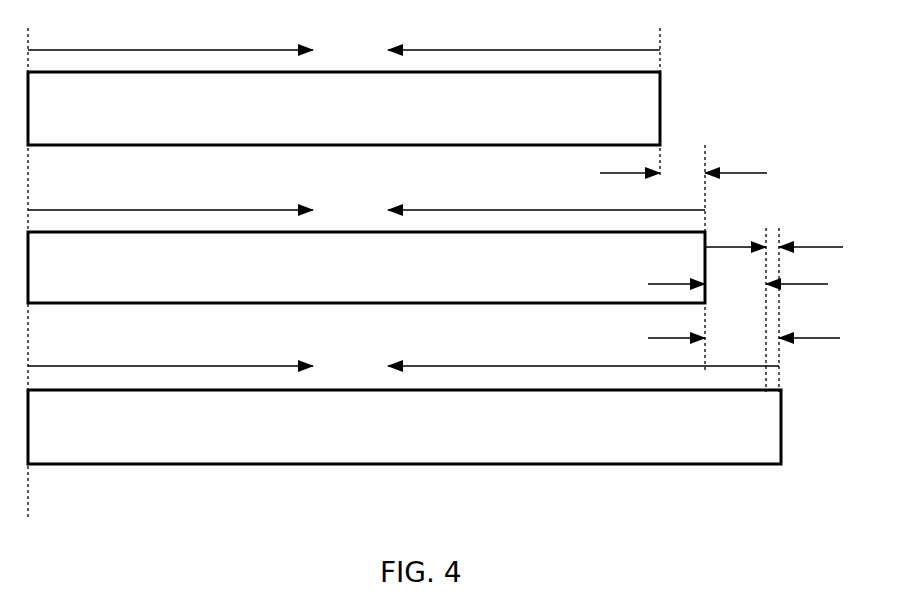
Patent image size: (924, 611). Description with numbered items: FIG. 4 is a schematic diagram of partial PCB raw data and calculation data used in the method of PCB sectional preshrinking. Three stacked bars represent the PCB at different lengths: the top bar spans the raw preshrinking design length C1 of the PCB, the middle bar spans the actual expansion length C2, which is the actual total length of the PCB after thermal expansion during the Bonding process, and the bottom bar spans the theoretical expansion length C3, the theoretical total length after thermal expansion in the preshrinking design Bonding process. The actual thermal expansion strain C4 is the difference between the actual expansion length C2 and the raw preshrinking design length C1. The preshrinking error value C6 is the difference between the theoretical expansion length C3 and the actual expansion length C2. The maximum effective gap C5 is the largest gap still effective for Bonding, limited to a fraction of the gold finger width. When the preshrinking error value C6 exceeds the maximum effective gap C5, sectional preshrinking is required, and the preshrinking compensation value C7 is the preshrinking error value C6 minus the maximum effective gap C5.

The raw preshrinking design length C1 is at (344, 50).
The actual expansion length C2 is at (366, 210).
The theoretical expansion length C3 is at (403, 366).
The actual thermal expansion strain C4 is at (683, 173).
The maximum effective gap C5 is at (774, 225).
The preshrinking error value C6 is at (744, 338).
The preshrinking compensation value C7 is at (738, 284).